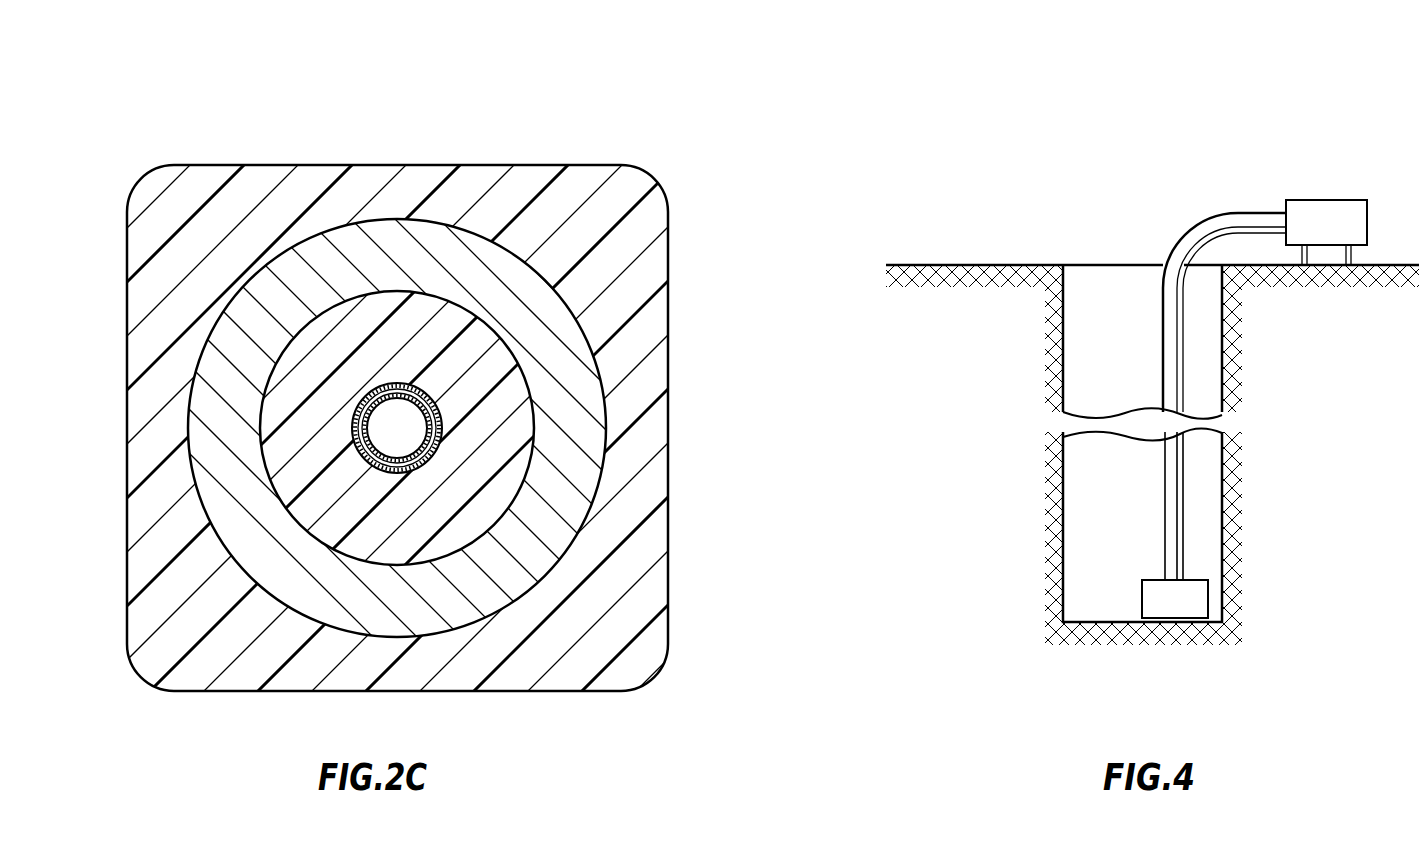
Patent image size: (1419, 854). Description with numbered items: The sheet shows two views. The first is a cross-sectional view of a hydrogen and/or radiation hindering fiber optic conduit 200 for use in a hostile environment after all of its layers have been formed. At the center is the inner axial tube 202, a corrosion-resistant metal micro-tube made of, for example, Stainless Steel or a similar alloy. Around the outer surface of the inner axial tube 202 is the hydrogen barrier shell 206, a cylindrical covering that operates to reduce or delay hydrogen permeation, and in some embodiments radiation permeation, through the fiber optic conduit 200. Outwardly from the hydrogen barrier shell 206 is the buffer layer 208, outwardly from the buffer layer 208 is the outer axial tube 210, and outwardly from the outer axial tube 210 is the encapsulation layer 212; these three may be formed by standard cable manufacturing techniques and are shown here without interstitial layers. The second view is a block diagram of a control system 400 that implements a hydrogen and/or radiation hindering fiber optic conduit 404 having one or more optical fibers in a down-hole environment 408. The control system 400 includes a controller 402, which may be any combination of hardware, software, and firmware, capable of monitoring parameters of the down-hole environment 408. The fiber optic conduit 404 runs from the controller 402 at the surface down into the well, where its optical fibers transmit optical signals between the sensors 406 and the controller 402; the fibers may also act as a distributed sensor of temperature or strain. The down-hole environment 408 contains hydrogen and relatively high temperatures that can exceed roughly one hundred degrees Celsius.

In FIG. 2C, the fiber optic conduit 200 is at (653, 150).
In FIG. 2C, the inner axial tube 202 is at (385, 395).
In FIG. 2C, the hydrogen barrier shell 206 is at (412, 385).
In FIG. 2C, the buffer layer 208 is at (493, 370).
In FIG. 2C, the outer axial tube 210 is at (582, 397).
In FIG. 2C, the encapsulation layer 212 is at (637, 428).
In FIG. 4, the control system 400 is at (1036, 202).
In FIG. 4, the controller 402 is at (1305, 237).
In FIG. 4, the fiber optic conduit 404 is at (1190, 218).
In FIG. 4, the sensors 406 is at (1152, 614).
In FIG. 4, the down-hole environment 408 is at (1087, 543).